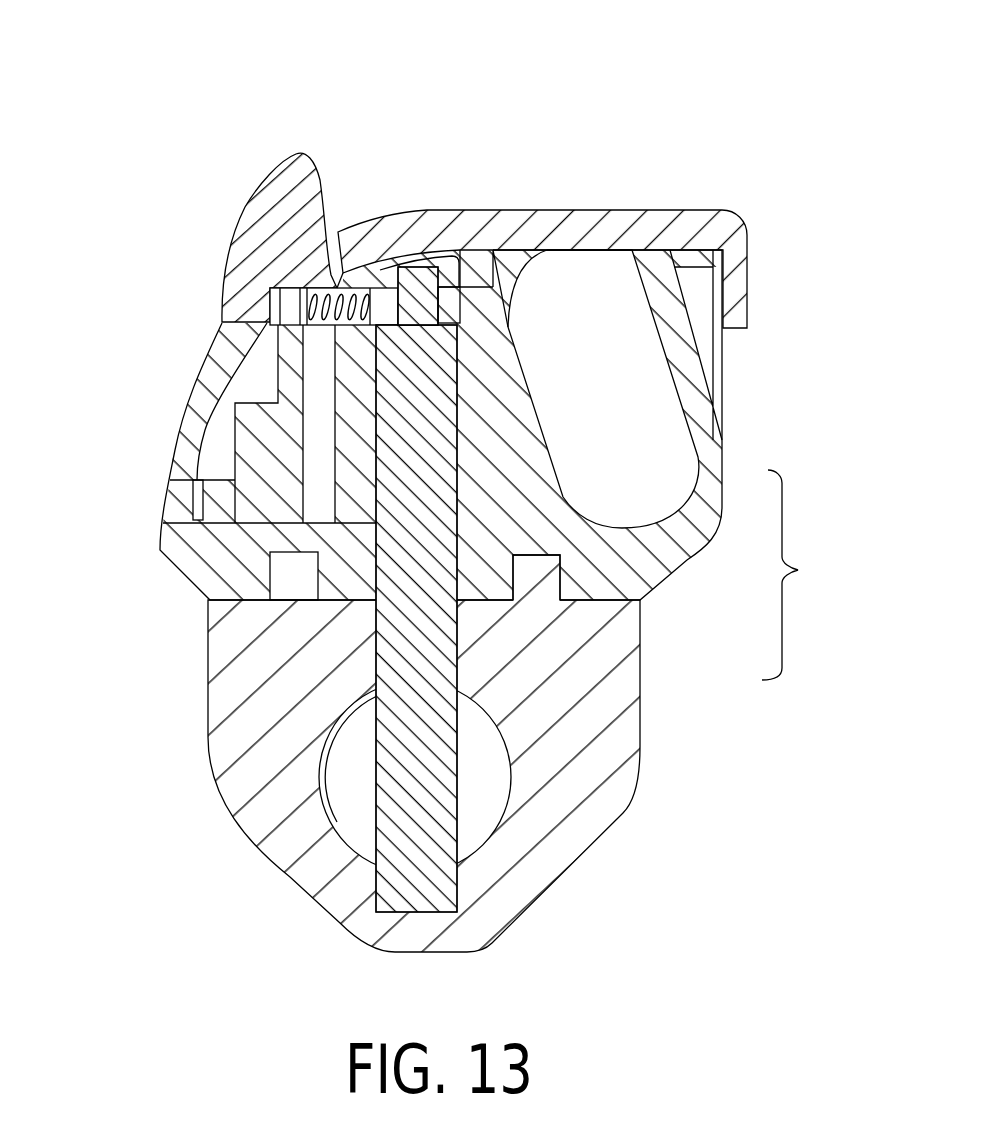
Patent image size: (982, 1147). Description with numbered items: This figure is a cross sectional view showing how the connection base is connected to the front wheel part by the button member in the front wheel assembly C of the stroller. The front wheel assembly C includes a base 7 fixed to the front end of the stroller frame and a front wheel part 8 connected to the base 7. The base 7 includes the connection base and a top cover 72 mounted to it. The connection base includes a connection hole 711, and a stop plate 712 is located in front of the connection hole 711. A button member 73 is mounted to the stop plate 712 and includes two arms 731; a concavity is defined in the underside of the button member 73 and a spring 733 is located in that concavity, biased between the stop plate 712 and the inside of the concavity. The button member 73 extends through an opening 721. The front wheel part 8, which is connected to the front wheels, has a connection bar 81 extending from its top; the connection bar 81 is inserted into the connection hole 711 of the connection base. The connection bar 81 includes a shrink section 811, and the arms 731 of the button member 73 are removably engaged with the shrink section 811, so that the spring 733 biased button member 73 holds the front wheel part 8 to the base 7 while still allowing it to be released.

The base 7 is at (747, 357).
The top cover 72 is at (578, 230).
The button member 73 is at (278, 200).
The connection hole 711 is at (377, 450).
The stop plate 712 is at (290, 320).
The opening 721 is at (338, 287).
The arms 731 is at (448, 305).
The spring 733 is at (297, 320).
The front wheel part 8 is at (573, 825).
The connection bar 81 is at (400, 518).
The shrink section 811 is at (387, 250).
The front wheel assembly C is at (797, 575).